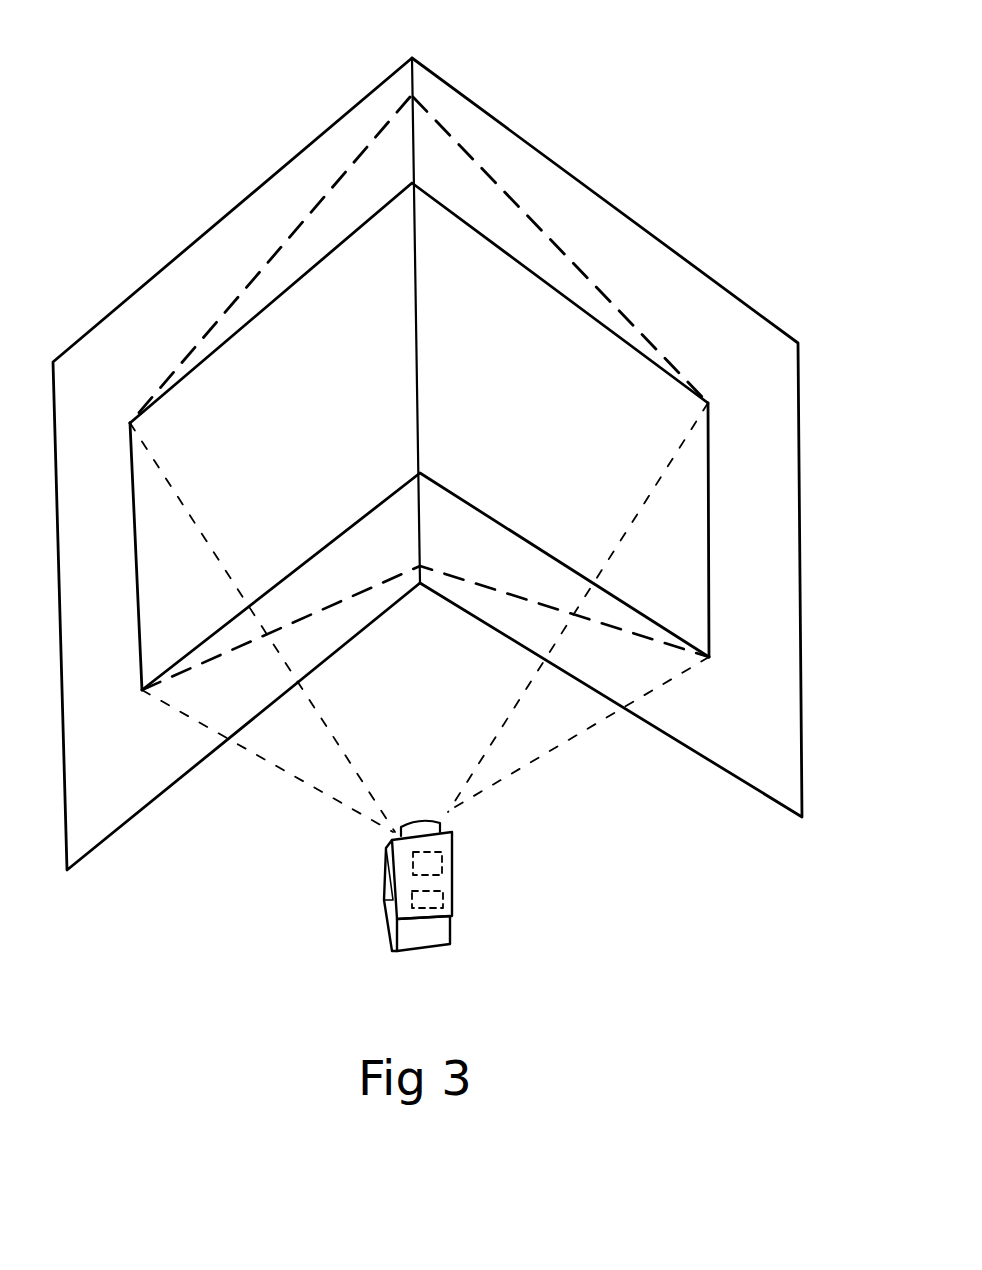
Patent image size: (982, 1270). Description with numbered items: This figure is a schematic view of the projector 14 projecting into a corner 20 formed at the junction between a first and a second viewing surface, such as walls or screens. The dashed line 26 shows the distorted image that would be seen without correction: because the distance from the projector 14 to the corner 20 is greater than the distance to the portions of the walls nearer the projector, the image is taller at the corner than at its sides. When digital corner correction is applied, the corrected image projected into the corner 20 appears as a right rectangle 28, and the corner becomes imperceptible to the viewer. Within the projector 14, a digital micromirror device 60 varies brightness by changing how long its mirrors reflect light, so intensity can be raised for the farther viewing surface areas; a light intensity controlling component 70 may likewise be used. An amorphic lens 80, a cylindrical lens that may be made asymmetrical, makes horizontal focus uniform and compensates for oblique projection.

The corner 20 is at (410, 84).
The dashed line 26 is at (547, 233).
The right rectangle 28 is at (711, 537).
The projector 14 is at (430, 930).
The amorphic lens 80 is at (430, 829).
The light intensity controlling component 70 is at (430, 860).
The digital micromirror device 60 is at (436, 899).